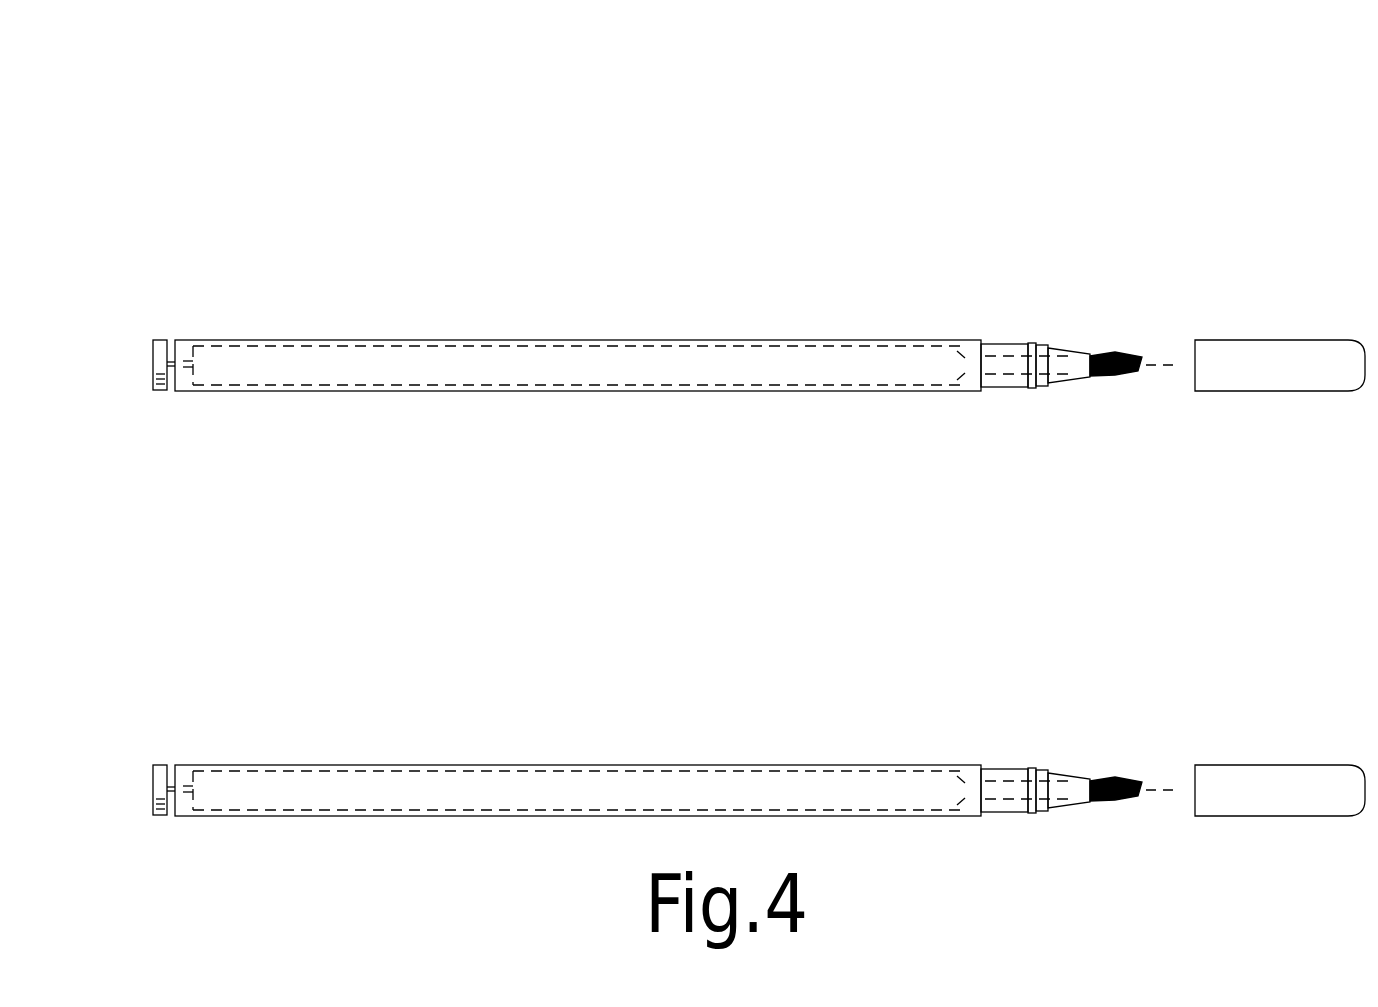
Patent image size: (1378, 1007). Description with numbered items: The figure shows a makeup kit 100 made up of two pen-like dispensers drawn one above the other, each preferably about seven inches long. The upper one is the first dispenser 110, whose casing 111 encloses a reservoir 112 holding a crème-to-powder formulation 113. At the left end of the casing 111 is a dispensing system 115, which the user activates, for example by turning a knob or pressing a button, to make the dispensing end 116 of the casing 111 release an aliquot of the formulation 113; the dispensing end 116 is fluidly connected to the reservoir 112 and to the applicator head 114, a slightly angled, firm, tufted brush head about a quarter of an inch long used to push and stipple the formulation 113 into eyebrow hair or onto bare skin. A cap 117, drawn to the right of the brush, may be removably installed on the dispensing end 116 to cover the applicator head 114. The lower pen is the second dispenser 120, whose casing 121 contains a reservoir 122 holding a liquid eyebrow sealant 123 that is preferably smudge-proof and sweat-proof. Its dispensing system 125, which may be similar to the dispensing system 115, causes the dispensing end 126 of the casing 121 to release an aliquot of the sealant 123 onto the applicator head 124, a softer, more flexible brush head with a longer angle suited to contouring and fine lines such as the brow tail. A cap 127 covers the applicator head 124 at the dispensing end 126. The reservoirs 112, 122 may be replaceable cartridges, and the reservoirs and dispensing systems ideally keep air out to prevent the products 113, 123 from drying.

The kit 100 is at (685, 195).
The first dispenser 110 is at (757, 307).
The casing 111 is at (449, 340).
The reservoir 112 is at (313, 346).
The crème-to-powder formulation 113 is at (628, 362).
The applicator head 114 is at (1116, 354).
The dispensing system 115 is at (159, 322).
The dispensing end 116 is at (1074, 335).
The cap 117 is at (1279, 360).
The second dispenser 120 is at (820, 733).
The casing 121 is at (478, 765).
The reservoir 122 is at (337, 771).
The liquid eyebrow sealant 123 is at (632, 790).
The applicator head 124 is at (1118, 781).
The dispensing system 125 is at (159, 747).
The dispensing end 126 is at (1076, 762).
The cap 127 is at (1285, 783).